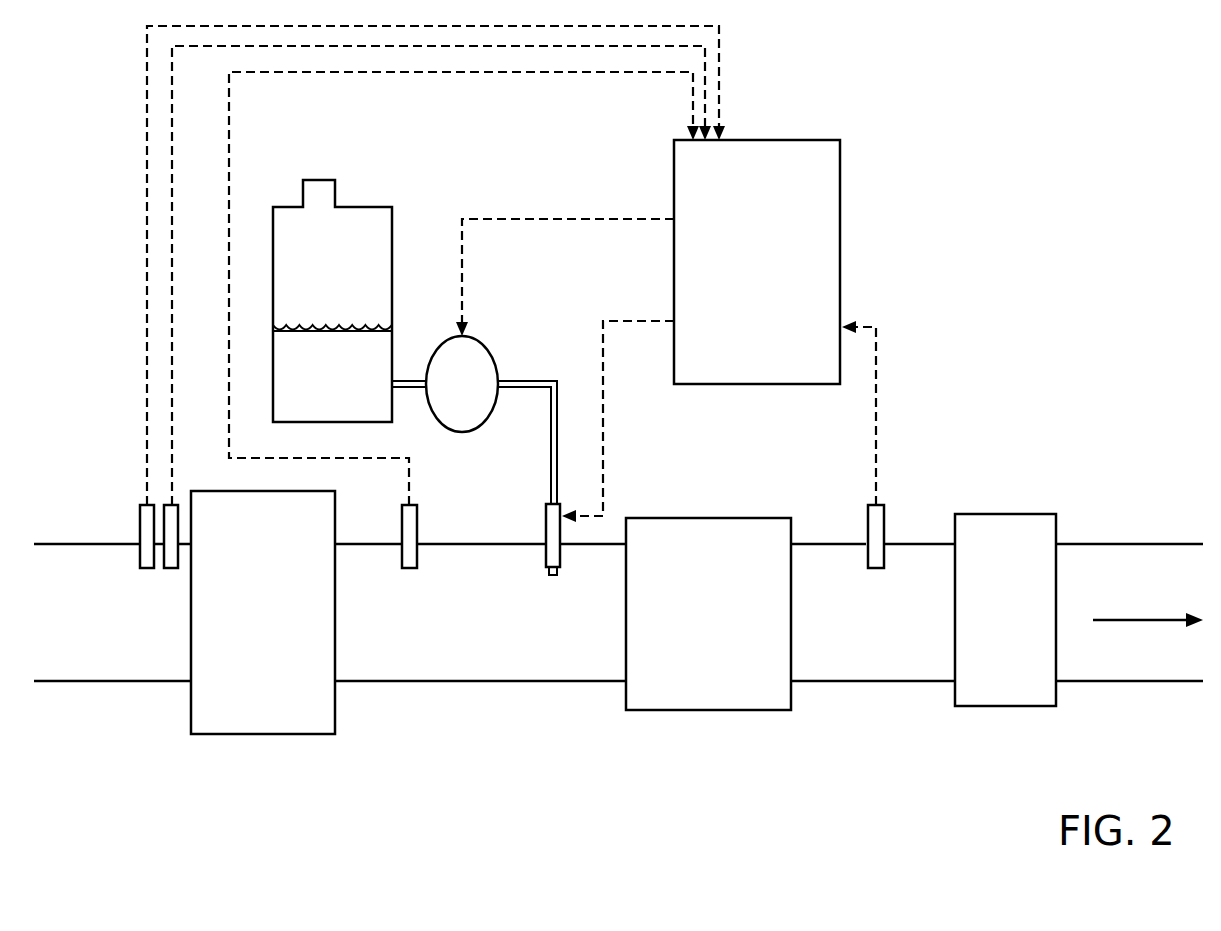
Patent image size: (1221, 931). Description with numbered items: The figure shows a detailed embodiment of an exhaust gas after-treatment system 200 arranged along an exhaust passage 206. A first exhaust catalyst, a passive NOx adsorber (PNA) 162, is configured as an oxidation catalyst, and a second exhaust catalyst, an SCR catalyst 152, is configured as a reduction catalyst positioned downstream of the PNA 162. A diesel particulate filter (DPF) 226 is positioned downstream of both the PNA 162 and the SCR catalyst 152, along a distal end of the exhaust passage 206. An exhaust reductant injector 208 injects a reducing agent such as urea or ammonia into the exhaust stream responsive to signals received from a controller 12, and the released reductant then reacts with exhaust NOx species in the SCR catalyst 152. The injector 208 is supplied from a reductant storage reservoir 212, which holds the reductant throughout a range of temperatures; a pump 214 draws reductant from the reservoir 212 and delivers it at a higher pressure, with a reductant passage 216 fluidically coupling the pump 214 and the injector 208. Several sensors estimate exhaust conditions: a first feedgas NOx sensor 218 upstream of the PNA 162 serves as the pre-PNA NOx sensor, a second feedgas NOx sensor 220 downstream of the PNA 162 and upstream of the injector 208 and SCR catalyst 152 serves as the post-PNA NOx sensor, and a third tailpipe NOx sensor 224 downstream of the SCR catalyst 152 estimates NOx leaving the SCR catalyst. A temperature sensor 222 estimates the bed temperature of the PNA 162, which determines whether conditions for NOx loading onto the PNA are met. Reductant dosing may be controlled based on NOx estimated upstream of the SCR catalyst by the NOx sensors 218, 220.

The exhaust gas after-treatment system 200 is at (920, 140).
The controller 12 is at (757, 262).
The reductant storage reservoir 212 is at (354, 206).
The pump 214 is at (445, 384).
The reductant passage 216 is at (558, 441).
The exhaust reductant injector 208 is at (546, 535).
The exhaust passage 206 is at (618, 612).
The first feedgas NOx sensor 218 is at (140, 546).
The temperature sensor 222 is at (178, 570).
The second feedgas NOx sensor 220 is at (410, 568).
The third tailpipe NOx sensor 224 is at (876, 568).
The passive NOx adsorber (PNA) 162 is at (263, 612).
The SCR catalyst 152 is at (708, 614).
The diesel particulate filter (DPF) 226 is at (1005, 610).